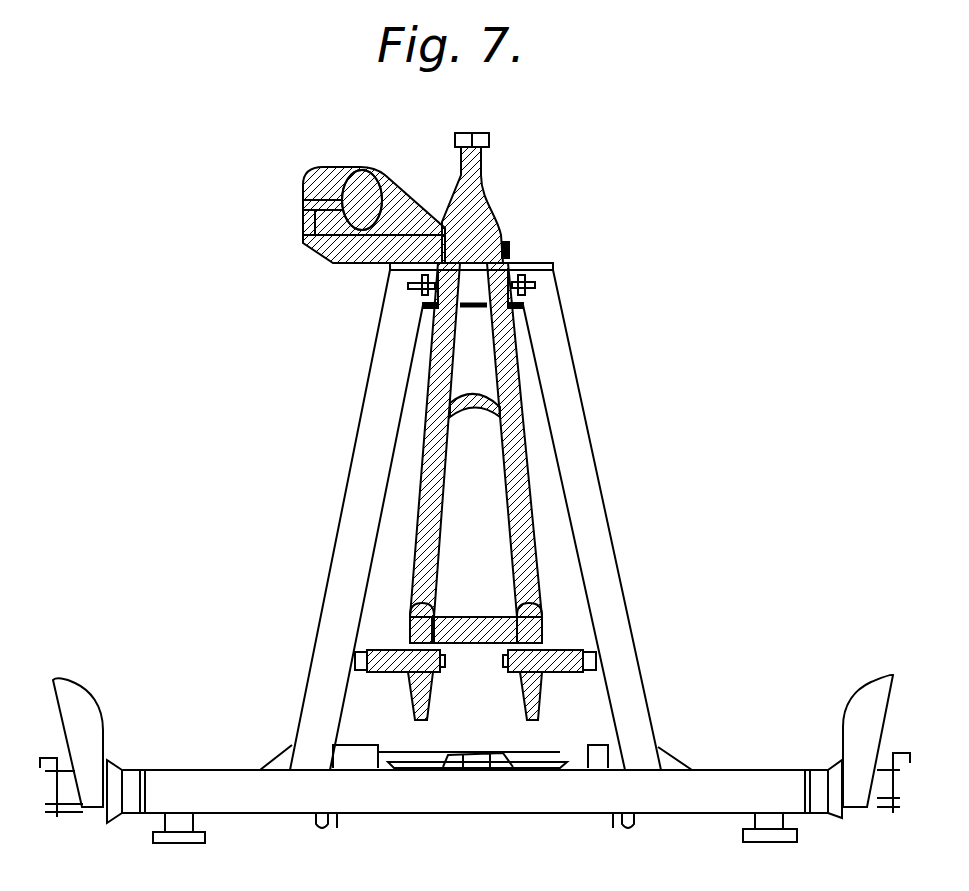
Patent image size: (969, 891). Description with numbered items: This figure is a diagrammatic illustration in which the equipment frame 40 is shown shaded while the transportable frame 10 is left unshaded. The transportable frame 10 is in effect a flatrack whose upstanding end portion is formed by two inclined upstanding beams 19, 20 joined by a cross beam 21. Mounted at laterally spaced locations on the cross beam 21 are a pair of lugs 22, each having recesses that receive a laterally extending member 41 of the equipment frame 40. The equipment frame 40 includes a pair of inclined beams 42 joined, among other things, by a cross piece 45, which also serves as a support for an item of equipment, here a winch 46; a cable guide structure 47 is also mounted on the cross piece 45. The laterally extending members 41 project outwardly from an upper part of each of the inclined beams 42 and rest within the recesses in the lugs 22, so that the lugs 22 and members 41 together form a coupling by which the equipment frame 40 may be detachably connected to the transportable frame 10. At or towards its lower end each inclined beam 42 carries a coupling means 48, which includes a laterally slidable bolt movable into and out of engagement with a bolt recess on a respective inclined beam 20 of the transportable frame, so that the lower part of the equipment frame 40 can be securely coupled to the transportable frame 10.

The transportable frame 10 is at (637, 622).
The inclined upstanding beam 19 is at (592, 438).
The inclined upstanding beam 20 is at (377, 397).
The cross beam 21 is at (520, 270).
The lug 22 is at (423, 305).
The equipment frame 40 is at (484, 453).
The laterally extending member 41 is at (408, 285).
The inclined beam 42 is at (427, 493).
The cross piece 45 is at (510, 245).
The winch 46 is at (362, 173).
The cable guide structure 47 is at (472, 190).
The coupling means 48 is at (402, 677).